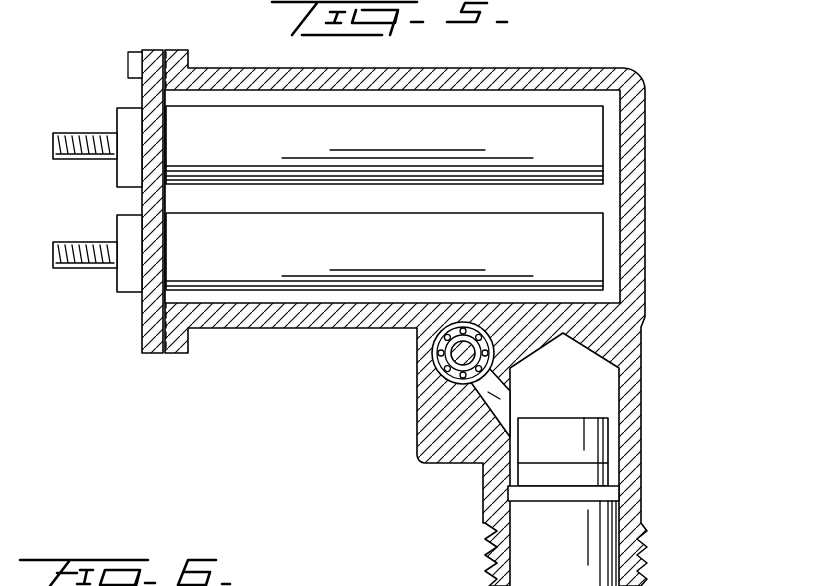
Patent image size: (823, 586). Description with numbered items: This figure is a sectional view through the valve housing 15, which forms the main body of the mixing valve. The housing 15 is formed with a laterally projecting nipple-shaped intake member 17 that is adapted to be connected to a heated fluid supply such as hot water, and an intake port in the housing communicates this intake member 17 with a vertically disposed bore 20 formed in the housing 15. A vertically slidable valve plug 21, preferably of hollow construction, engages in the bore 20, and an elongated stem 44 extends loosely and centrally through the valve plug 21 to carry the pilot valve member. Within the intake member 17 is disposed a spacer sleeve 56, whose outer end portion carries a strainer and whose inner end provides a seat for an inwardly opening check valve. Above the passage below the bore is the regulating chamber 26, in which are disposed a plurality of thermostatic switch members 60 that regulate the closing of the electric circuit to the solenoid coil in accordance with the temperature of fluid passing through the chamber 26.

The valve housing 15 is at (645, 295).
The intake member 17 is at (645, 510).
The bore 20 is at (443, 386).
The valve plug 21 is at (423, 363).
The regulating chamber 26 is at (620, 252).
The stem 44 is at (462, 352).
The spacer sleeve 56 is at (520, 518).
The thermostatic switch member 60 is at (597, 222).